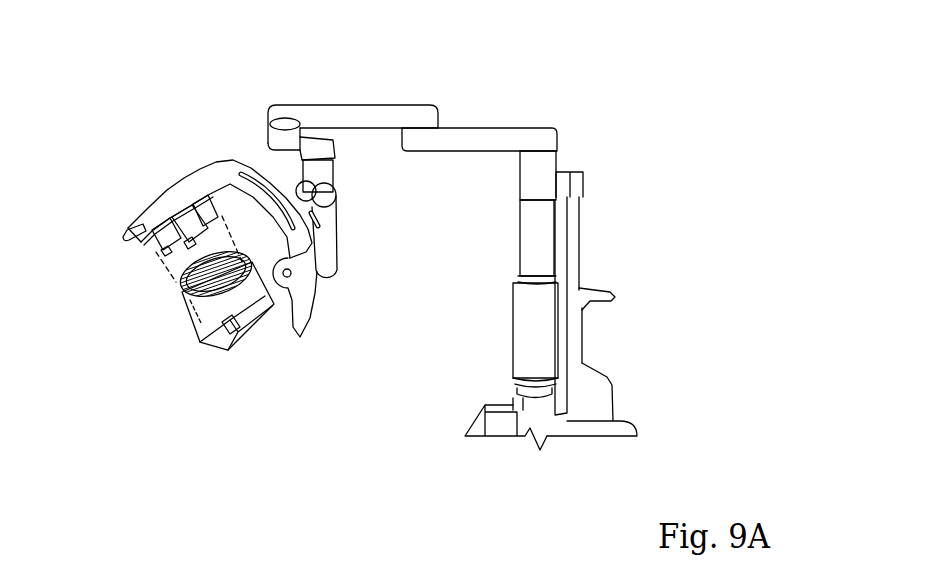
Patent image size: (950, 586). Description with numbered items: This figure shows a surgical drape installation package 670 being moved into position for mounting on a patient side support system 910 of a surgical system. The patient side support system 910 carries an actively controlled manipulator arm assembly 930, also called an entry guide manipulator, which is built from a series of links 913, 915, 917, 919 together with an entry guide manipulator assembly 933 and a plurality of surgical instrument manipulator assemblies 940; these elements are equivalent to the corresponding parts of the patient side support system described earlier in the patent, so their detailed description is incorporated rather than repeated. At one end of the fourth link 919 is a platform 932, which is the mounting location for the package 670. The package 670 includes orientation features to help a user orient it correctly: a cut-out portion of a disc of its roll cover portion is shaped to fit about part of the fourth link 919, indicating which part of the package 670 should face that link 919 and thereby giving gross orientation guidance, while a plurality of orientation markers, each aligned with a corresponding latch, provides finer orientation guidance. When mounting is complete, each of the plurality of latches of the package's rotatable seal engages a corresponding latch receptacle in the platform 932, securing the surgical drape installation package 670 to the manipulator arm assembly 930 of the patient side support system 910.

The patient side support system 910 is at (495, 81).
The link 913 is at (328, 177).
The link 915 is at (327, 247).
The link 917 is at (292, 187).
The fourth link 919 is at (322, 300).
The manipulator arm assembly 930 is at (78, 91).
The platform 932 is at (150, 212).
The entry guide manipulator assembly 933 is at (150, 243).
The plurality of surgical instrument manipulator assemblies 940 is at (203, 258).
The surgical drape installation package 670 is at (194, 322).